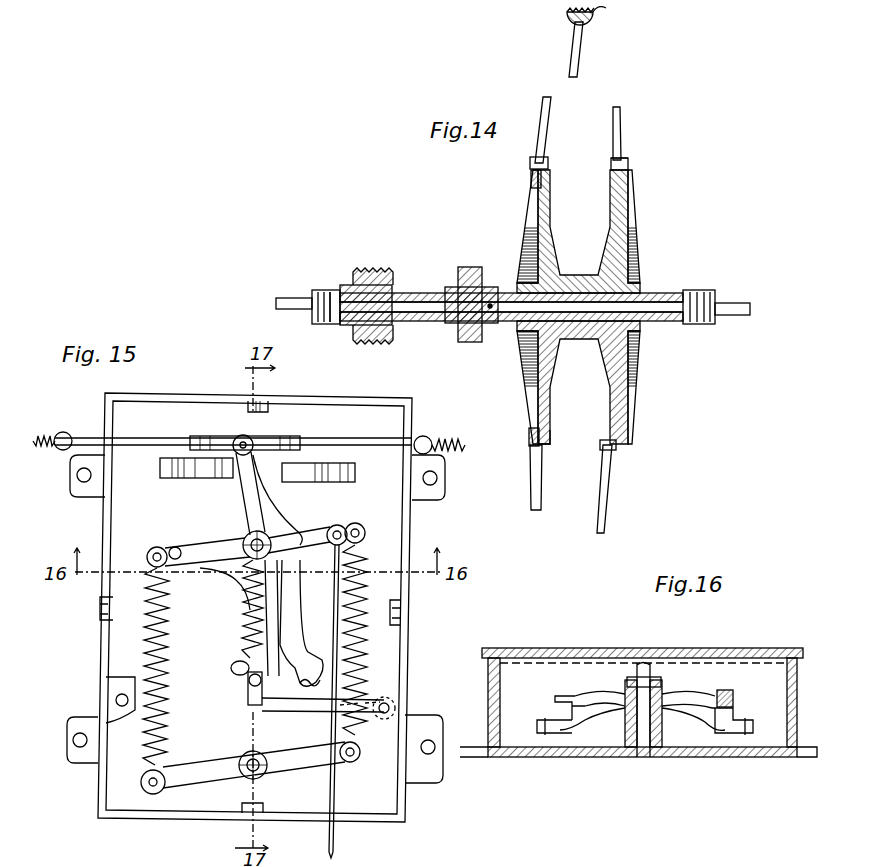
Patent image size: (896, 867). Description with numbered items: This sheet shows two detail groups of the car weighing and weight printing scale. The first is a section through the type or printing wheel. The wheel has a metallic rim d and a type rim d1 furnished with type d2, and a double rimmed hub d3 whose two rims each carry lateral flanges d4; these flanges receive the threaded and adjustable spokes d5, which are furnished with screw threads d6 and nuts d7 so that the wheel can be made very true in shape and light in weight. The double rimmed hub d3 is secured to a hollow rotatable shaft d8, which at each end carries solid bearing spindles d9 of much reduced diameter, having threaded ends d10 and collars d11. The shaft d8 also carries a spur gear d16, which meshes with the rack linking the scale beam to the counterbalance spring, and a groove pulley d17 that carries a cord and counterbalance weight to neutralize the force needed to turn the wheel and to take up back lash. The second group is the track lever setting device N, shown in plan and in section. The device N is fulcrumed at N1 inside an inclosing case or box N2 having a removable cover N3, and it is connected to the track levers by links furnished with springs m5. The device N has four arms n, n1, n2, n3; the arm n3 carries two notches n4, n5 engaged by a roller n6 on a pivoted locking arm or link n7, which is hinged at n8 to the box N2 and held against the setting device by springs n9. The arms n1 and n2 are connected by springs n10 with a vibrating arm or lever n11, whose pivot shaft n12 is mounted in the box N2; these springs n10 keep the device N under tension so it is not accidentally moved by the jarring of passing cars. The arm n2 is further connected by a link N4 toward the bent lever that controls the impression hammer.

In FIG. 14, the metallic rim d is at (592, 22).
In FIG. 14, the type rim d1 is at (565, 15).
In FIG. 14, the type d2 is at (594, 9).
In FIG. 14, the double rimmed hub d3 is at (553, 180).
In FIG. 14, the lateral flanges d4 is at (530, 167).
In FIG. 14, the threaded adjustable spokes d5 is at (623, 126).
In FIG. 14, the screw threads d6 is at (533, 192).
In FIG. 14, the nuts d7 is at (630, 160).
In FIG. 14, the hollow rotatable shaft d8 is at (660, 294).
In FIG. 14, the solid bearing spindles d9 is at (287, 297).
In FIG. 14, the threaded ends d10 is at (333, 314).
In FIG. 14, the collars d11 is at (318, 290).
In FIG. 14, the spur gear d16 is at (466, 268).
In FIG. 14, the groove pulley d17 is at (363, 272).
In FIG. 15, the springs m5 is at (52, 448).
In FIG. 15, the arm n is at (254, 490).
In FIG. 15, the track lever setting device N is at (240, 532).
In FIG. 16, the track lever setting device N is at (667, 700).
In FIG. 15, the fulcrum N1 is at (266, 534).
In FIG. 16, the fulcrum N1 is at (643, 758).
In FIG. 15, the inclosing case or box N2 is at (100, 632).
In FIG. 16, the inclosing case or box N2 is at (487, 690).
In FIG. 16, the removable cover N3 is at (522, 648).
In FIG. 15, the link N4 is at (340, 845).
In FIG. 16, the link N4 is at (727, 693).
In FIG. 15, the arm n1 is at (158, 547).
In FIG. 16, the arm n1 is at (574, 695).
In FIG. 15, the arm n2 is at (340, 525).
In FIG. 16, the arm n2 is at (642, 730).
In FIG. 15, the arm n3 is at (292, 632).
In FIG. 15, the notch n4 is at (231, 670).
In FIG. 15, the notch n5 is at (298, 680).
In FIG. 15, the roller n6 is at (246, 681).
In FIG. 15, the pivoted locking arm or link n7 is at (296, 714).
In FIG. 15, the hinge n8 is at (384, 720).
In FIG. 15, the springs n9 is at (245, 592).
In FIG. 15, the springs n10 is at (362, 562).
In FIG. 16, the springs n10 is at (546, 737).
In FIG. 15, the vibrating arm or lever n11 is at (226, 762).
In FIG. 15, the pivot shaft n12 is at (246, 790).